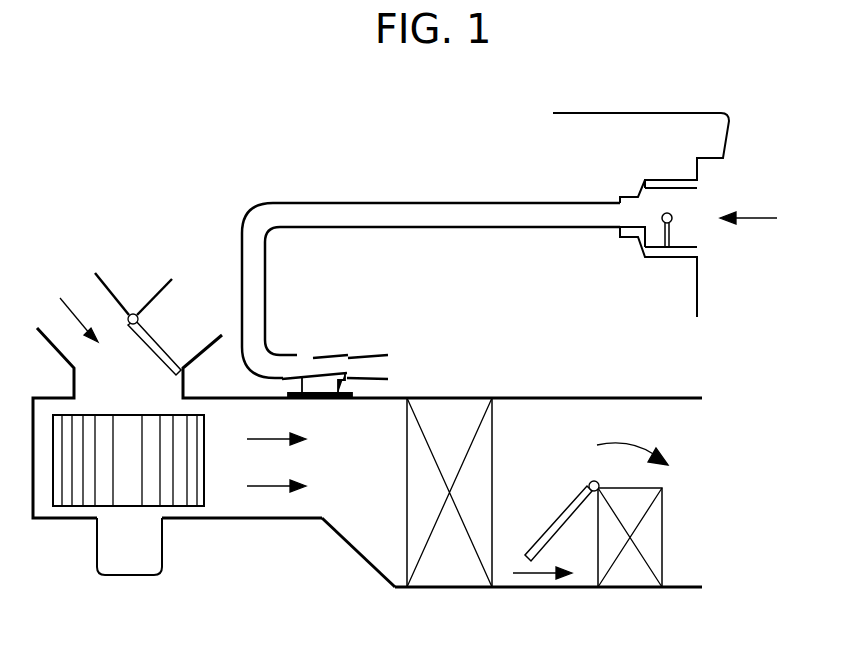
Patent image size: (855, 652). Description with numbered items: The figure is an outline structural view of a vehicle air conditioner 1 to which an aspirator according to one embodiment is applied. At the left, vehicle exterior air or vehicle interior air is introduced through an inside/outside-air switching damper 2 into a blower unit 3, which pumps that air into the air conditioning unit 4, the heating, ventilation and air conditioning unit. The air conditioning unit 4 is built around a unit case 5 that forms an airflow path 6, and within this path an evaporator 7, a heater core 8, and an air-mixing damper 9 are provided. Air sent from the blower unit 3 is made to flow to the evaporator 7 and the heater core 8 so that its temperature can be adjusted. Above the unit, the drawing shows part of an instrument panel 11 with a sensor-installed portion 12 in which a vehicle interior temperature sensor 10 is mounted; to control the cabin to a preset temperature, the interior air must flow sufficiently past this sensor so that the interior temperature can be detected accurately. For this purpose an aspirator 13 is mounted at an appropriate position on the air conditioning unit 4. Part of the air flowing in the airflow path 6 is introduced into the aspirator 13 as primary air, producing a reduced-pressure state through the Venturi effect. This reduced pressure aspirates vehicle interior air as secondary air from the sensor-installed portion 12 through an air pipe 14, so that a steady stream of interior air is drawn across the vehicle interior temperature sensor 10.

The vehicle air conditioner 1 is at (220, 166).
The inside/outside-air switching damper 2 is at (158, 337).
The blower unit 3 is at (55, 535).
The air conditioning unit 4 is at (540, 388).
The unit case 5 is at (358, 557).
The airflow path 6 is at (372, 480).
The evaporator 7 is at (453, 415).
The heater core 8 is at (650, 530).
The air-mixing damper 9 is at (562, 522).
The vehicle interior temperature sensor 10 is at (675, 220).
The instrument panel 11 is at (730, 139).
The sensor-installed portion 12 is at (662, 257).
The aspirator 13 is at (378, 340).
The air pipe 14 is at (395, 203).